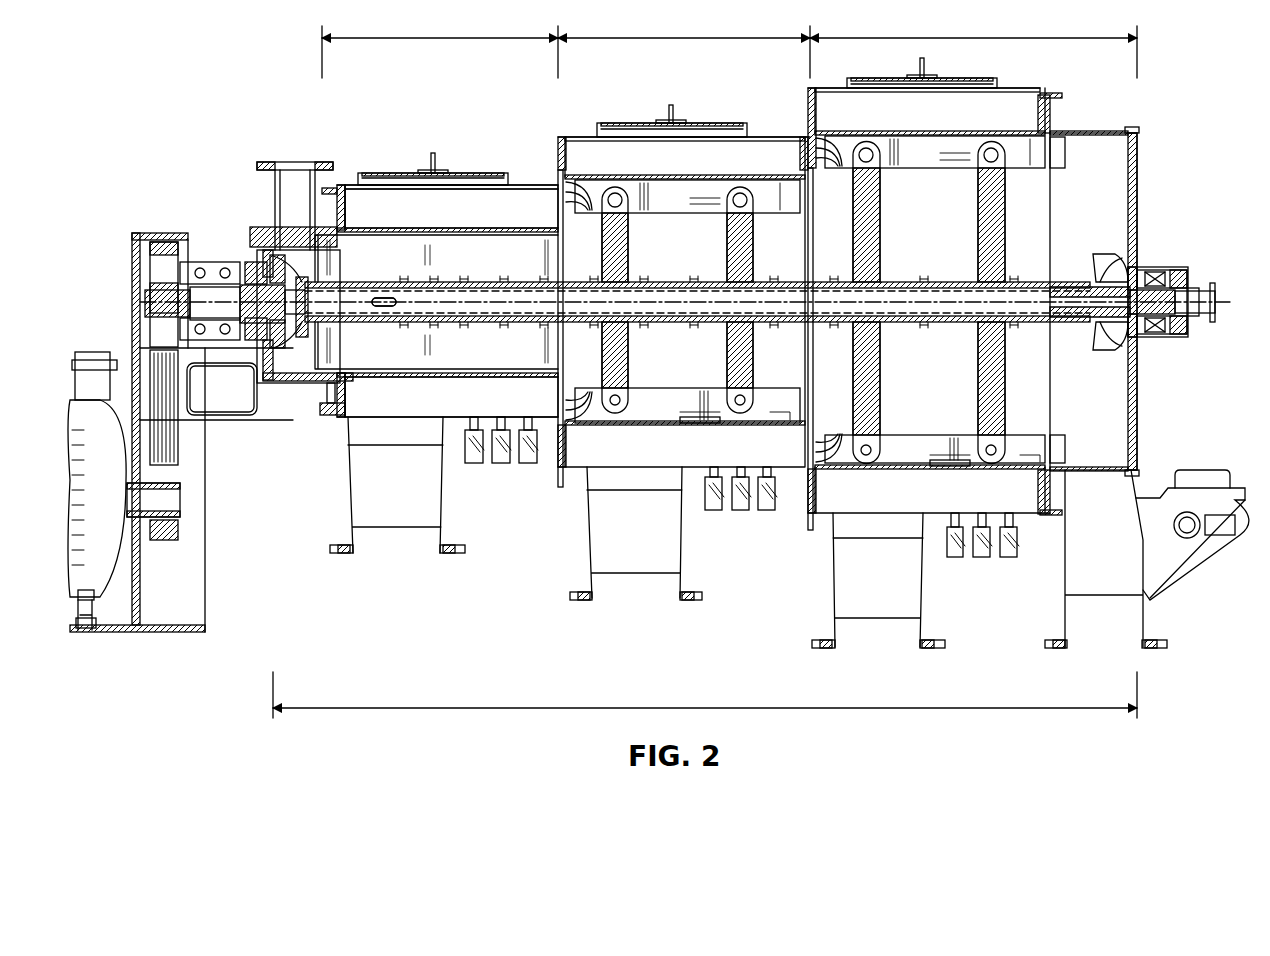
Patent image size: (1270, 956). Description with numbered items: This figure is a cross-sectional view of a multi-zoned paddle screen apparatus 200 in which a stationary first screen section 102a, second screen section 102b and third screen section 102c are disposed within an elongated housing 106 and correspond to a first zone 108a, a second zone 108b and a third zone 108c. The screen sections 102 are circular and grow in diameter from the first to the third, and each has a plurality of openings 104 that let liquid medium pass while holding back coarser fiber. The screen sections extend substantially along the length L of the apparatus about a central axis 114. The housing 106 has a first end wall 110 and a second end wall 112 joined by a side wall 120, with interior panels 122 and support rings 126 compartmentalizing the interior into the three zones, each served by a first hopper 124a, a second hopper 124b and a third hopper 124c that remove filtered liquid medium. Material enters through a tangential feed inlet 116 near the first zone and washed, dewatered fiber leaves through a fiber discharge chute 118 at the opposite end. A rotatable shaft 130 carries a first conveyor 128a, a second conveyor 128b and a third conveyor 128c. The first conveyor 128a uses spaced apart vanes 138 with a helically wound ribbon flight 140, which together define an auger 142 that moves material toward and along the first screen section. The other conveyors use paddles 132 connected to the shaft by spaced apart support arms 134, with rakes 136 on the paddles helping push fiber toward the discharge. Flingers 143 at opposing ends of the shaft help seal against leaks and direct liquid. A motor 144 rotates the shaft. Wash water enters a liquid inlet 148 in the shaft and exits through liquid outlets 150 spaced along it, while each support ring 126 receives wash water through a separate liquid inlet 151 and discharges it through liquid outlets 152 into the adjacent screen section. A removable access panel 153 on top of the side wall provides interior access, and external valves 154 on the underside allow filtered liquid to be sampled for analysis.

The apparatus 200 is at (160, 140).
The screen sections 102 is at (1055, 112).
The first screen section 102a is at (440, 229).
The second screen section 102b is at (688, 176).
The third screen section 102c is at (938, 132).
The openings 104 is at (528, 218).
The housing 106 is at (347, 184).
The first zone 108a is at (428, 36).
The second zone 108b is at (682, 36).
The third zone 108c is at (984, 36).
The first end wall 110 is at (327, 405).
The second end wall 112 is at (1050, 116).
The central axis 114 is at (1196, 290).
The tangential feed inlet 116 is at (296, 170).
The fiber discharge chute 118 is at (1106, 645).
The side wall 120 is at (540, 184).
The panel 122 is at (572, 136).
The first hopper 124a is at (398, 548).
The second hopper 124b is at (644, 595).
The third hopper 124c is at (884, 645).
The support ring 126 is at (632, 390).
The first conveyor 128a is at (398, 286).
The second conveyor 128b is at (656, 282).
The third conveyor 128c is at (910, 282).
The shaft 130 is at (1062, 280).
The paddles 132 is at (650, 190).
The support arms 134 is at (726, 226).
The rake 136 is at (708, 438).
The vanes 138 is at (470, 266).
The ribbon flight 140 is at (432, 380).
The auger 142 is at (392, 382).
The flingers 143 is at (298, 338).
The motor 144 is at (96, 352).
The liquid inlet 148 is at (1218, 298).
The liquid outlets 150 is at (428, 330).
The liquid inlet 151 is at (560, 487).
The liquid outlets 152 is at (592, 182).
The removable access panel 153 is at (488, 172).
The external valves 154 is at (474, 463).
The length L is at (552, 706).